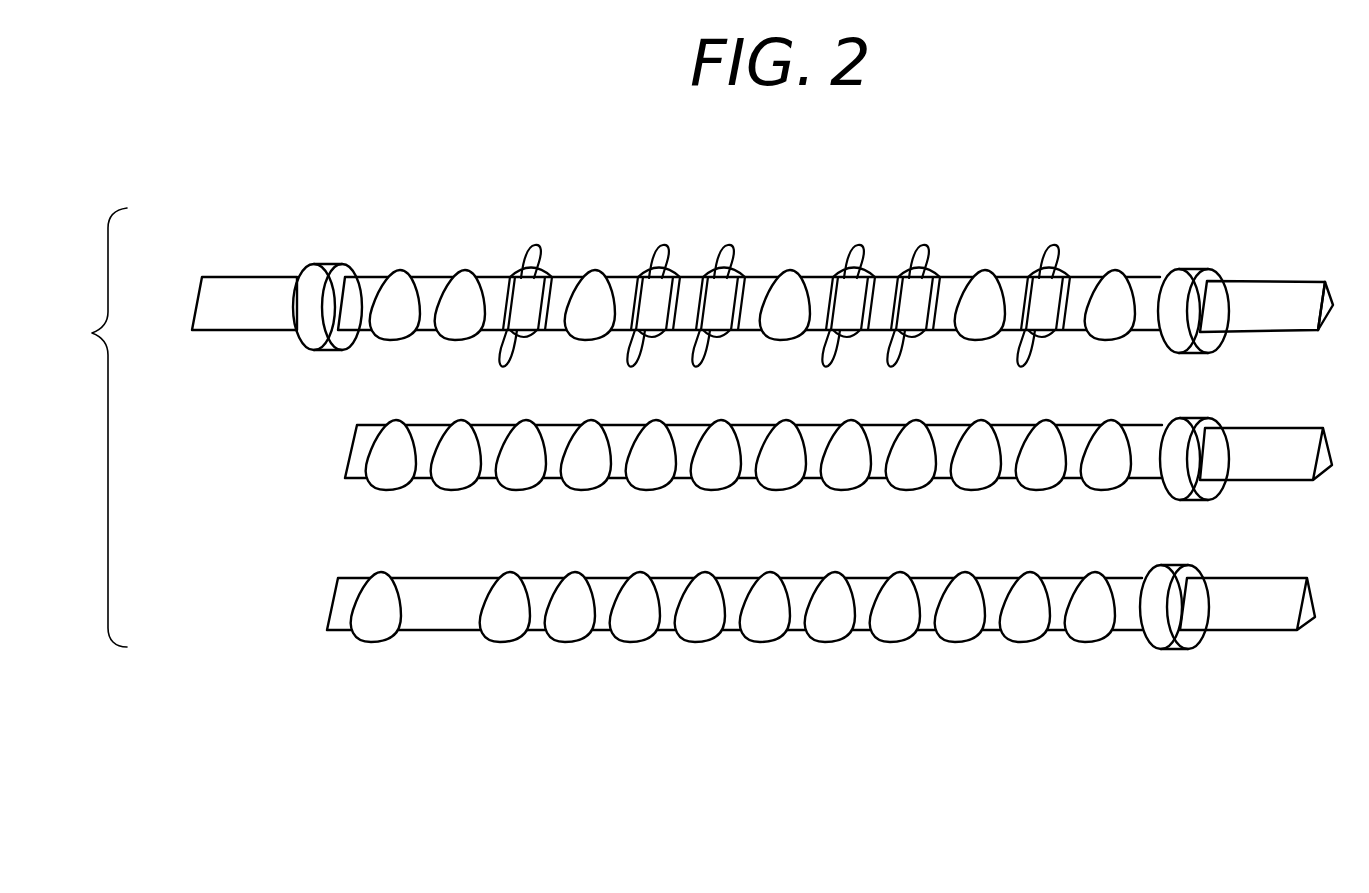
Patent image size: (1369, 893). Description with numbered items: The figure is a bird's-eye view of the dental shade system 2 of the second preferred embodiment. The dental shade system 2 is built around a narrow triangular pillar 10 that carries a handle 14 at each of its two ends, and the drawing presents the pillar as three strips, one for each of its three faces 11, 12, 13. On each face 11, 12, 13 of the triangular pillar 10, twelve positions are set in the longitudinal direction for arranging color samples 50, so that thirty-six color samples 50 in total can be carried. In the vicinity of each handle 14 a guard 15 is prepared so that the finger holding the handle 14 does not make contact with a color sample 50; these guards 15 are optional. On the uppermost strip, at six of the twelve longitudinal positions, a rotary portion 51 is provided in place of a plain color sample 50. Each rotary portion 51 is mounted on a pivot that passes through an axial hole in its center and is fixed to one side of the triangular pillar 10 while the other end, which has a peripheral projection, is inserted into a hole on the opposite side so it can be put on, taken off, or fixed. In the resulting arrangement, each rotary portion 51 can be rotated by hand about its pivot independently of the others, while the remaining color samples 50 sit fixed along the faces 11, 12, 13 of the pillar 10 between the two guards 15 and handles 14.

The dental shade system 2 is at (893, 157).
The triangular pillar 10 is at (760, 270).
The face 11 is at (213, 295).
The face 12 is at (1320, 332).
The face 13 is at (1325, 305).
The handle 14 is at (257, 290).
The guard 15 is at (322, 270).
The color sample 50 is at (396, 293).
The rotary portion 51 is at (540, 293).